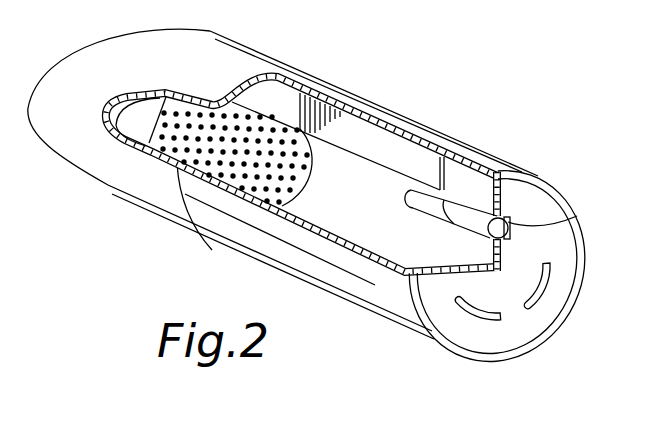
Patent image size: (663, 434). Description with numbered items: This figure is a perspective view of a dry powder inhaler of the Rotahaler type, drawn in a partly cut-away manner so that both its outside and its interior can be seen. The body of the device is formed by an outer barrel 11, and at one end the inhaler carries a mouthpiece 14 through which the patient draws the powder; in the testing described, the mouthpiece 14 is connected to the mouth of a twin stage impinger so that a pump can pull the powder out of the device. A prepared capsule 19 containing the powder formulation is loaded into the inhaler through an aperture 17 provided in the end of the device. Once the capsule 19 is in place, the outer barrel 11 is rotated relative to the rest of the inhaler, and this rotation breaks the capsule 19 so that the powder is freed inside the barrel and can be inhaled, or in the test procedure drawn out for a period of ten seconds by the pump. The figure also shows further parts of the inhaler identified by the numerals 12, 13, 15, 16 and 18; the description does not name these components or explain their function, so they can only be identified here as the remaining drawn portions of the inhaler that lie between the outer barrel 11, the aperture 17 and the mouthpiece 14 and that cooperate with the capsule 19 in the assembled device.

The outer barrel 11 is at (478, 150).
The inner liner 12 is at (335, 108).
The perforated section 13 is at (240, 180).
The mouthpiece 14 is at (117, 160).
The end cap 15 is at (543, 203).
The slots 16 is at (543, 293).
The aperture 17 is at (577, 216).
The partition wall 18 is at (394, 153).
The capsule 19 is at (433, 207).